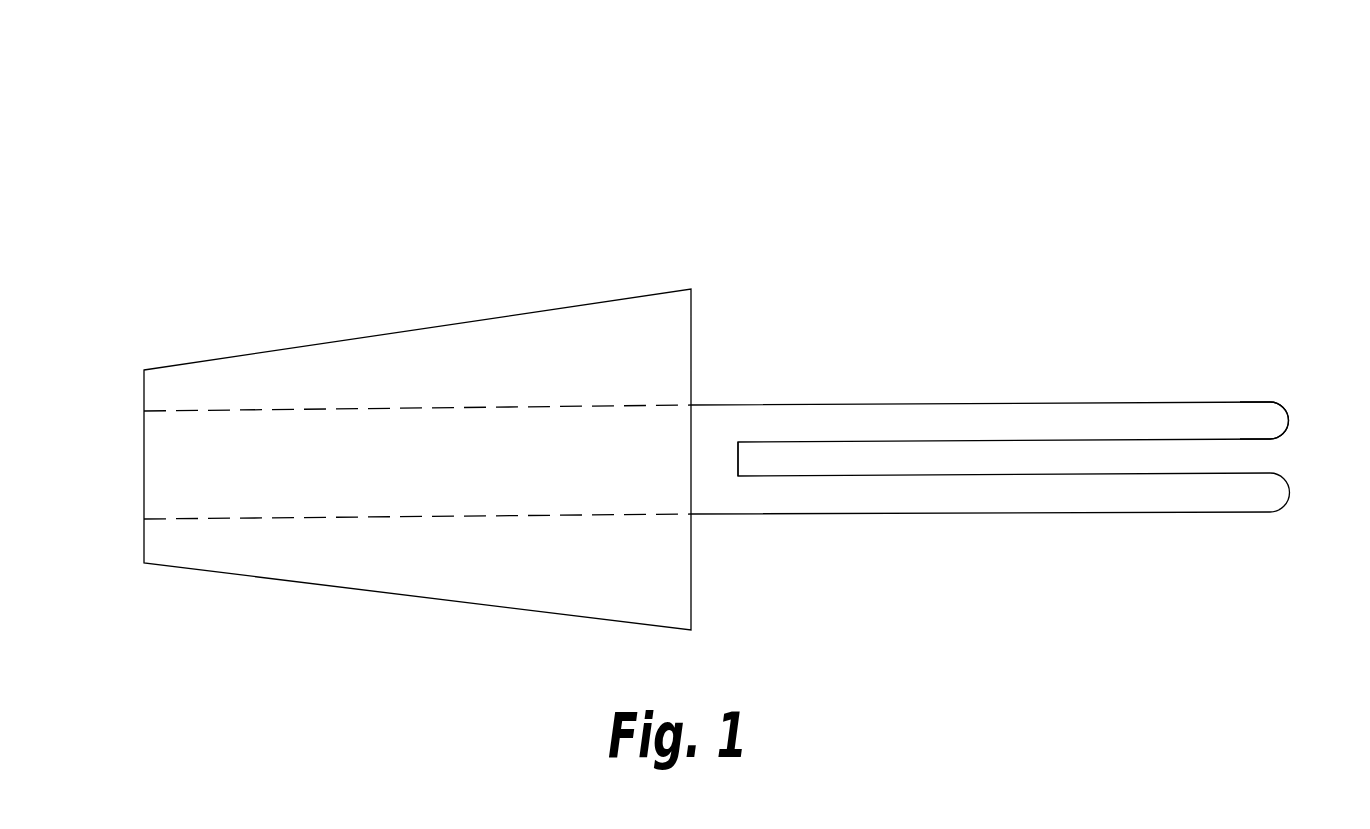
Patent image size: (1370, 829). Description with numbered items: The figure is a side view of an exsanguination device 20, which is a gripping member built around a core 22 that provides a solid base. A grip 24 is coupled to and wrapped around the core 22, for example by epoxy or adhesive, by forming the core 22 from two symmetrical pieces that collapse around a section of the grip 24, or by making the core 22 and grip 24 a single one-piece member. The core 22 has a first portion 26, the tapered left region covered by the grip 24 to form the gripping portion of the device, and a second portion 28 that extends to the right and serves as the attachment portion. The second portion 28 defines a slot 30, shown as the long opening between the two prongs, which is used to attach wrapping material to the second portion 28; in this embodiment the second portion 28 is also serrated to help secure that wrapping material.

The exsanguination device 20 is at (1104, 114).
The core 22 is at (808, 404).
The grip 24 is at (468, 320).
The first portion 26 is at (144, 423).
The second portion 28 is at (1202, 402).
The slot 30 is at (1244, 457).